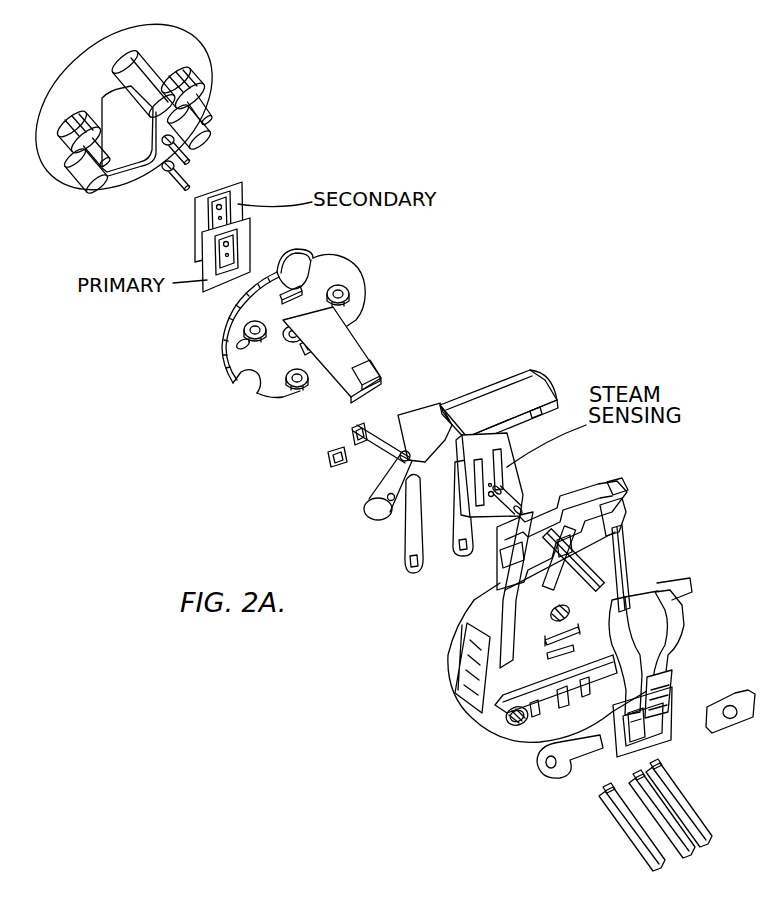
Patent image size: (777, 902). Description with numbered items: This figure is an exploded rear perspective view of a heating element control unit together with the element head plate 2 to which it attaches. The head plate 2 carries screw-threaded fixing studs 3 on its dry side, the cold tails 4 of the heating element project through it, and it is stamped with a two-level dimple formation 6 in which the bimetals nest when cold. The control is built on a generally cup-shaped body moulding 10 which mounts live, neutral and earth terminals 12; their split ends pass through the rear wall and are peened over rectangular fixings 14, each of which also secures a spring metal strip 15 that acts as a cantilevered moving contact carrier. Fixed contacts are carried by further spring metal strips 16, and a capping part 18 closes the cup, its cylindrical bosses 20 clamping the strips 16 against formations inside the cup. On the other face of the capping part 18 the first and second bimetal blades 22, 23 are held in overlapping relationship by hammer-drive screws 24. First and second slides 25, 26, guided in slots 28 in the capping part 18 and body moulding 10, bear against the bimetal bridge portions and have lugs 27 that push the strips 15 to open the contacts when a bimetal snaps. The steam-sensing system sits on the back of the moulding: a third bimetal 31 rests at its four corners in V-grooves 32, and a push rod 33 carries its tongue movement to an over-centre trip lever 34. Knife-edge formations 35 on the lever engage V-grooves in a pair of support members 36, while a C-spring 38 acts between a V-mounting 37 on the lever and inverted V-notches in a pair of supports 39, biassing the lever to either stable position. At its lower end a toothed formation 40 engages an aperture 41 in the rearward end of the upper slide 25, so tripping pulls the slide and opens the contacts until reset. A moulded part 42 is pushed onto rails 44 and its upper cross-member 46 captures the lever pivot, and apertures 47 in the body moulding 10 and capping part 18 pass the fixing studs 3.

The head plate 2 is at (214, 66).
The fixing studs 3 is at (134, 54).
The cold tails 4 is at (205, 118).
The two-level dimple formation 6 is at (124, 150).
The body moulding 10 is at (467, 700).
The terminals 12 is at (650, 815).
The rectangular fixings 14 is at (352, 430).
The spring metal strip 15 is at (460, 504).
The spring metal strips 16 is at (394, 474).
The capping part 18 is at (332, 272).
The cylindrical bosses 20 is at (352, 287).
The first bimetal blade 22 is at (238, 193).
The second bimetal blade 23 is at (240, 232).
The hammer-drive screws 24 is at (188, 184).
The first slide 25 is at (357, 350).
The second slide 26 is at (380, 430).
The lugs 27 is at (313, 362).
The slots 28 is at (313, 258).
The third bimetal 31 is at (503, 457).
The V-grooves 32 is at (530, 512).
The push rod 33 is at (506, 481).
The trip lever 34 is at (675, 642).
The knife-edge formations 35 is at (626, 600).
The support members 36 is at (622, 512).
The V-mounting 37 is at (598, 750).
The C-spring 38 is at (668, 690).
The supports 39 is at (560, 583).
The toothed formation 40 is at (643, 730).
The aperture 41 is at (360, 370).
The moulded part 42 is at (487, 392).
The rails 44 is at (620, 488).
The upper cross-member 46 is at (548, 396).
The apertures 47 is at (280, 268).